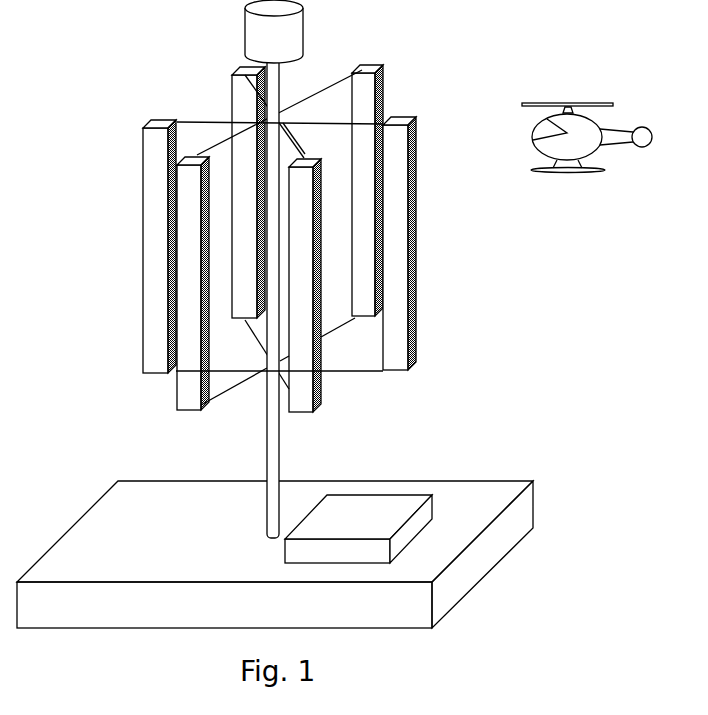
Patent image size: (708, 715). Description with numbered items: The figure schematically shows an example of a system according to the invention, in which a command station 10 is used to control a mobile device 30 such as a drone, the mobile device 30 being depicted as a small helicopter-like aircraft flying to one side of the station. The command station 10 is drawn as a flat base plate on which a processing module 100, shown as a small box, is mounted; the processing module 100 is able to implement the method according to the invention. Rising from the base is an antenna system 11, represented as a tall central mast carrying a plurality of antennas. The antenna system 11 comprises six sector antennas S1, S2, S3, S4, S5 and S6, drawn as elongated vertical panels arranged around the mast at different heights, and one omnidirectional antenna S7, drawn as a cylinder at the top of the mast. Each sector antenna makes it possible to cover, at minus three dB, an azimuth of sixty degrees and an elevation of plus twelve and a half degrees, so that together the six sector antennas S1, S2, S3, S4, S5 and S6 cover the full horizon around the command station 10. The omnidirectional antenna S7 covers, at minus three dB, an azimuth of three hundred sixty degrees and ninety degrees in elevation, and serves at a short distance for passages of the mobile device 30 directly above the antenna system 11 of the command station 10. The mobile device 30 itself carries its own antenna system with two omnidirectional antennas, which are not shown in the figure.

The command station 10 is at (533, 512).
The processing module 100 is at (432, 520).
The antenna system 11 is at (280, 468).
The sector antenna S1 is at (383, 72).
The sector antenna S2 is at (417, 300).
The sector antenna S3 is at (322, 405).
The sector antenna S4 is at (177, 405).
The sector antenna S5 is at (143, 198).
The sector antenna S6 is at (232, 87).
The omnidirectional antenna S7 is at (245, 12).
The mobile device 30 is at (613, 104).